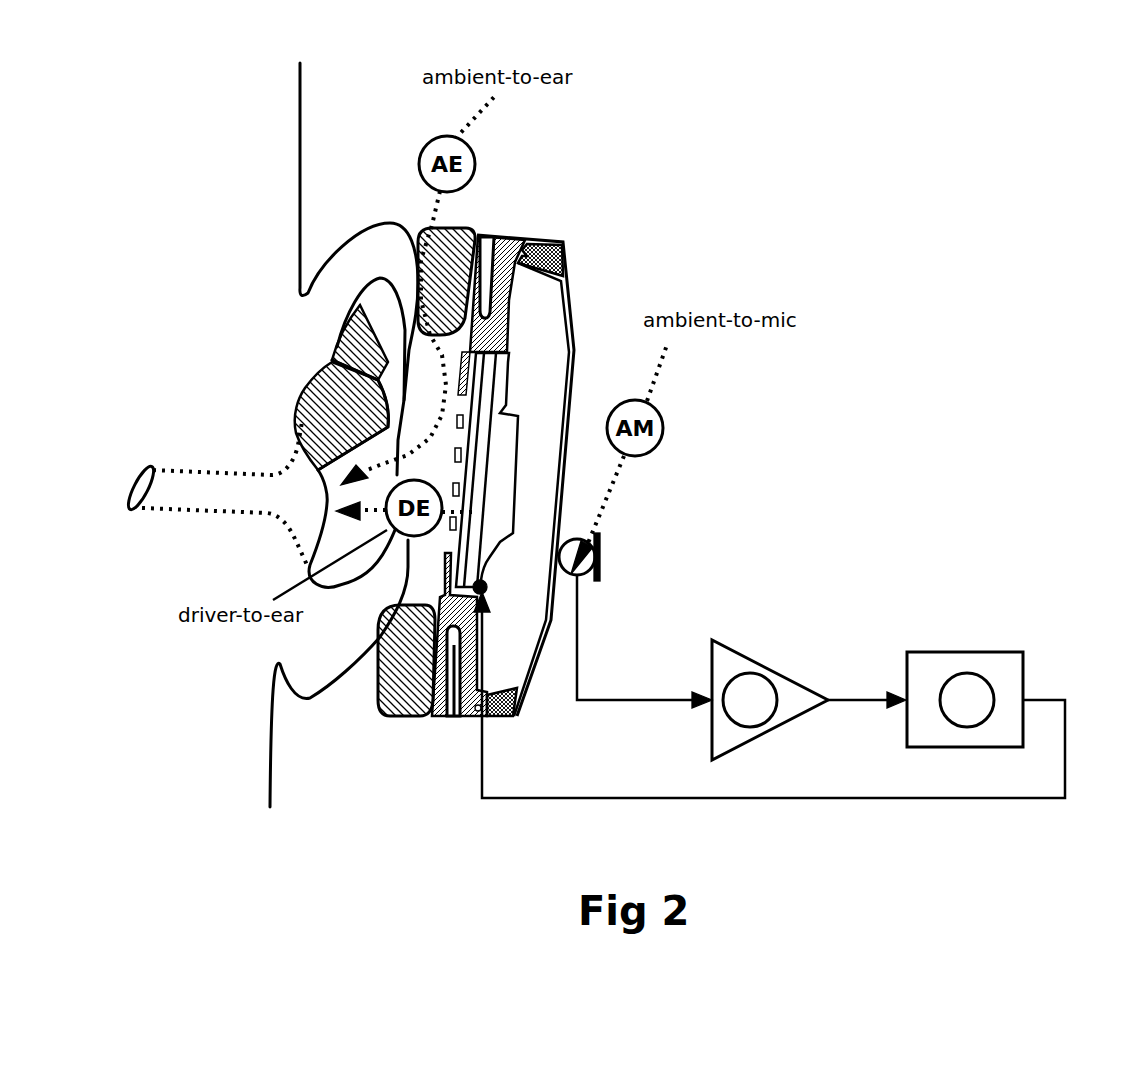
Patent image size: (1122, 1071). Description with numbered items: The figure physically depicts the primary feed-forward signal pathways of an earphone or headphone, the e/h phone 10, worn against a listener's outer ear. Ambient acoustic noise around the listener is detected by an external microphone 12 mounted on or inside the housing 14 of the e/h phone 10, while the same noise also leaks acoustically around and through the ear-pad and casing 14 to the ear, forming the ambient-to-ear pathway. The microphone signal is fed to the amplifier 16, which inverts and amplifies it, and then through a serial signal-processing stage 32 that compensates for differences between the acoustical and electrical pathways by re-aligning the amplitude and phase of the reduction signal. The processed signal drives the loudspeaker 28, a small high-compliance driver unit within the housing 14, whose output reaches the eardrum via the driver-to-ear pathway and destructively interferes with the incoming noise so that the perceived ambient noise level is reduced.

The e/h phone 10 is at (626, 168).
The microphone 12 is at (603, 556).
The housing 14 is at (527, 693).
The pre-amplifier and inverter circuit 16 is at (793, 677).
The loudspeaker 28 is at (523, 453).
The serial signal-processing stage 32 is at (1027, 672).